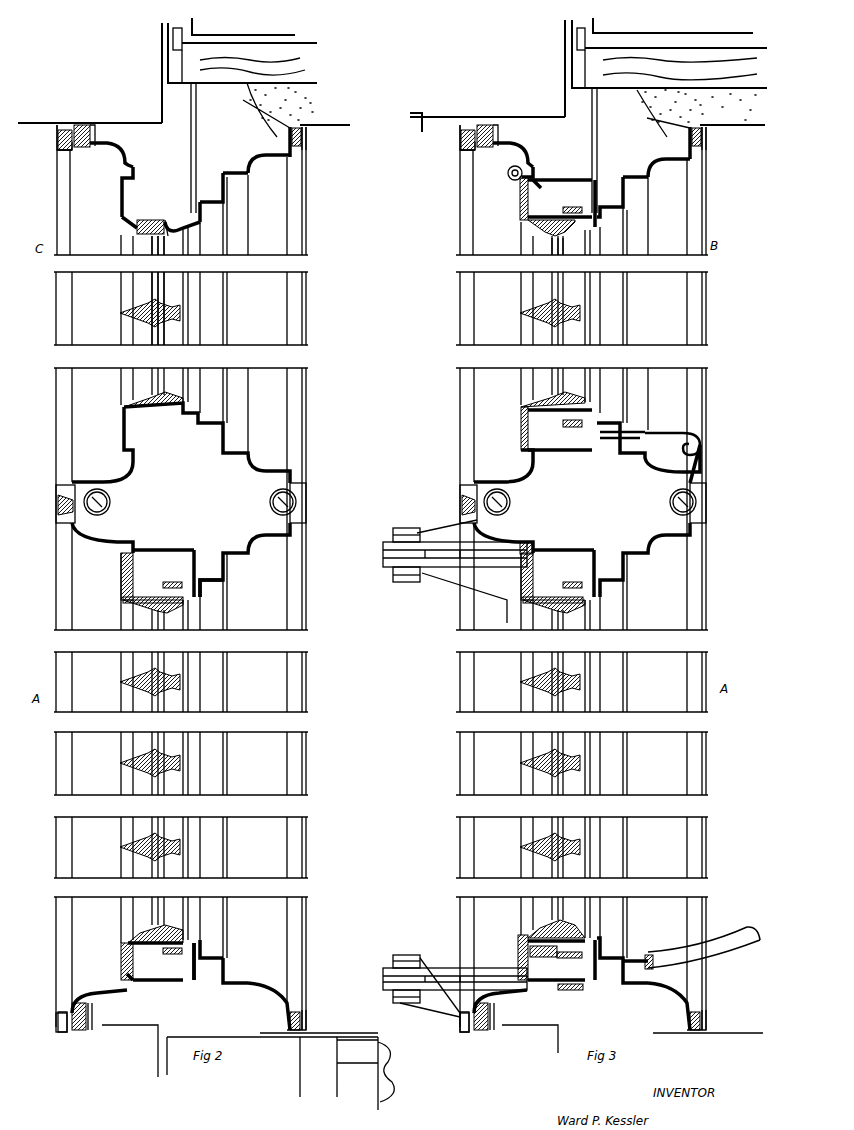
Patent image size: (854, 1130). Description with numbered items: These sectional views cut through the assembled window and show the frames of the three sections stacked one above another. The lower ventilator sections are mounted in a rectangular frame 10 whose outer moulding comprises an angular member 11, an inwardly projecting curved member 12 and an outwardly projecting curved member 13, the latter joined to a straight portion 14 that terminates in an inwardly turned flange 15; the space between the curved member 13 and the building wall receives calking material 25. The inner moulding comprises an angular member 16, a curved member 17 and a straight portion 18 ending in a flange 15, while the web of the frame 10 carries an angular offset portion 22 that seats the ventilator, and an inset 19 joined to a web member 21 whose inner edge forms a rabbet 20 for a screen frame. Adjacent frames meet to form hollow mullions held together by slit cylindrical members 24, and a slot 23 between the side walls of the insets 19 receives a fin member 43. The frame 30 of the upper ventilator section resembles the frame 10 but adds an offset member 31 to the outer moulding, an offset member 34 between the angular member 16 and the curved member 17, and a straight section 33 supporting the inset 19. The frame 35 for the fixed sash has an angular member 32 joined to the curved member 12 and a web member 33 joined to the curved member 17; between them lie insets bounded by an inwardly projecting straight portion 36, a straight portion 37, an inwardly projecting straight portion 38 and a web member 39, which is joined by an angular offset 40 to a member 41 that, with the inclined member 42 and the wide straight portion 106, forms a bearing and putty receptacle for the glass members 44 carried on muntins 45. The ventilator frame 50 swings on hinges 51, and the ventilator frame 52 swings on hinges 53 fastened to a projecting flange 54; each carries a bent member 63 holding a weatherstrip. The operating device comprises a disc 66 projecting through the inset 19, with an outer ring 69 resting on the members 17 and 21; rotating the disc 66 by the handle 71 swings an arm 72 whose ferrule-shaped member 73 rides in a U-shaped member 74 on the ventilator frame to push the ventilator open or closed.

In FIG. 2, the rectangular frame 10 is at (181, 768).
In FIG. 3, the rectangular frame 10 is at (582, 771).
In FIG. 2, the angular member 11 is at (58, 137).
In FIG. 3, the angular member 11 is at (461, 143).
In FIG. 2, the inwardly projecting curved member 12 is at (112, 145).
In FIG. 3, the inwardly projecting curved member 12 is at (512, 145).
In FIG. 2, the outwardly projecting curved member 13 is at (68, 124).
In FIG. 3, the outwardly projecting curved member 13 is at (469, 124).
In FIG. 2, the straight portion 14 is at (80, 124).
In FIG. 3, the straight portion 14 is at (483, 124).
In FIG. 2, the inwardly turned flange 15 is at (93, 127).
In FIG. 3, the inwardly turned flange 15 is at (492, 127).
In FIG. 2, the angular member 16 is at (303, 140).
In FIG. 3, the angular member 16 is at (704, 137).
In FIG. 2, the curved member 17 is at (262, 161).
In FIG. 3, the curved member 17 is at (662, 167).
In FIG. 2, the straight portion 18 is at (299, 128).
In FIG. 3, the straight portion 18 is at (698, 127).
In FIG. 2, the inset 19 is at (226, 962).
In FIG. 3, the inset 19 is at (603, 996).
In FIG. 2, the rabbet 20 is at (204, 949).
In FIG. 3, the rabbet 20 is at (603, 211).
In FIG. 2, the web member 21 is at (144, 982).
In FIG. 3, the web member 21 is at (561, 178).
In FIG. 2, the angular offset portion 22 is at (133, 981).
In FIG. 3, the angular offset portion 22 is at (536, 185).
In FIG. 2, the slot 23 is at (201, 593).
In FIG. 2, the cylindrical-shaped members 24 is at (109, 497).
In FIG. 3, the cylindrical-shaped members 24 is at (511, 502).
In FIG. 2, the calking material 25 is at (58, 506).
In FIG. 3, the calking material 25 is at (462, 131).
In FIG. 2, the frame 30 is at (165, 961).
In FIG. 3, the frame 30 is at (587, 319).
In FIG. 2, the offset member 31 is at (64, 151).
In FIG. 3, the offset member 31 is at (468, 151).
In FIG. 2, the angular member 32 is at (134, 166).
In FIG. 3, the angular member 32 is at (531, 165).
In FIG. 2, the web member 33 is at (233, 172).
In FIG. 3, the web member 33 is at (634, 172).
In FIG. 2, the offset member 34 is at (295, 151).
In FIG. 3, the offset member 34 is at (706, 158).
In FIG. 2, the frame 35 is at (181, 341).
In FIG. 2, the inwardly projecting straight portion 36 is at (224, 187).
In FIG. 2, the straight portion 37 is at (201, 200).
In FIG. 2, the inwardly projecting straight portion 38 is at (195, 222).
In FIG. 2, the web member 39 is at (184, 228).
In FIG. 2, the angular offset 40 is at (168, 235).
In FIG. 2, the member 41 is at (146, 224).
In FIG. 2, the inclined member 42 is at (130, 233).
In FIG. 2, the fin members 43 is at (197, 131).
In FIG. 3, the fin members 43 is at (598, 120).
In FIG. 2, the glass members 44 is at (155, 286).
In FIG. 3, the glass members 44 is at (551, 252).
In FIG. 2, the muntins 45 is at (122, 315).
In FIG. 3, the muntins 45 is at (522, 315).
In FIG. 2, the frame 50 is at (141, 596).
In FIG. 3, the frame 50 is at (543, 596).
In FIG. 3, the hinge 51 is at (439, 768).
In FIG. 3, the frame 52 is at (537, 219).
In FIG. 3, the hinges 53 is at (501, 179).
In FIG. 2, the projecting flange 54 is at (121, 580).
In FIG. 3, the projecting flange 54 is at (521, 213).
In FIG. 2, the member 63 is at (176, 584).
In FIG. 3, the member 63 is at (580, 578).
In FIG. 3, the disc 66 is at (648, 960).
In FIG. 3, the outer ring 69 is at (623, 972).
In FIG. 3, the handle 71 is at (721, 954).
In FIG. 3, the arm 72 is at (547, 982).
In FIG. 3, the ferrule-shaped member 73 is at (543, 950).
In FIG. 3, the U-shaped member 74 is at (530, 950).
In FIG. 2, the straight portion 106 is at (121, 203).